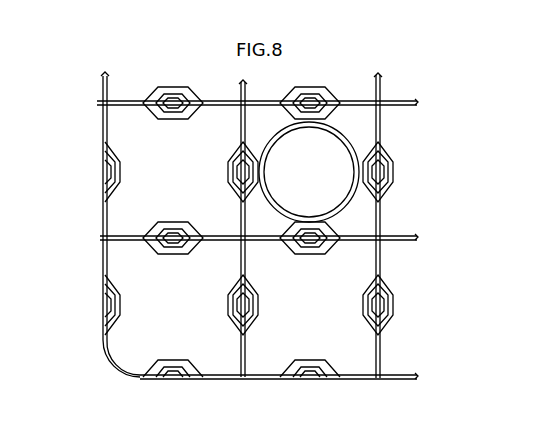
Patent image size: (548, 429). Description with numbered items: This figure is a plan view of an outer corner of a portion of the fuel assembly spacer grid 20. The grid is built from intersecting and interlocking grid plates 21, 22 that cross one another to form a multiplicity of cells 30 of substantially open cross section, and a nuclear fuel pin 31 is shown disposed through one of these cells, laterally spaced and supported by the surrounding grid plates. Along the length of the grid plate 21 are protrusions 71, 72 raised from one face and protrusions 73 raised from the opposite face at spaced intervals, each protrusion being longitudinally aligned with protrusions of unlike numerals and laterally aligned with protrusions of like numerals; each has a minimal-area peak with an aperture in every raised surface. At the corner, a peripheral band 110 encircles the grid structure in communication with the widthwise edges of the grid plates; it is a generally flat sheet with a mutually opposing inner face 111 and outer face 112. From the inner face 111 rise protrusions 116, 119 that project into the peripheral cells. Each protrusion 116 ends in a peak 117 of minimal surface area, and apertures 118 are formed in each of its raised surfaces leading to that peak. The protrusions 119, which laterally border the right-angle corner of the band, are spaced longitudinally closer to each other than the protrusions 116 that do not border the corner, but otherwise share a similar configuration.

The fuel assembly spacer grid 20 is at (440, 124).
The grid plate 21 is at (398, 102).
The grid plate 22 is at (243, 92).
The cell 30 is at (281, 131).
The nuclear fuel pin 31 is at (277, 201).
The protrusion 71 is at (344, 236).
The protrusion 72 is at (243, 200).
The protrusion 73 is at (320, 112).
The peripheral band 110 is at (105, 262).
The inner face 111 is at (107, 138).
The outer face 112 is at (103, 116).
The protrusion 116 is at (105, 215).
The peak 117 is at (310, 360).
The aperture 118 is at (310, 378).
The protrusion 119 is at (110, 334).